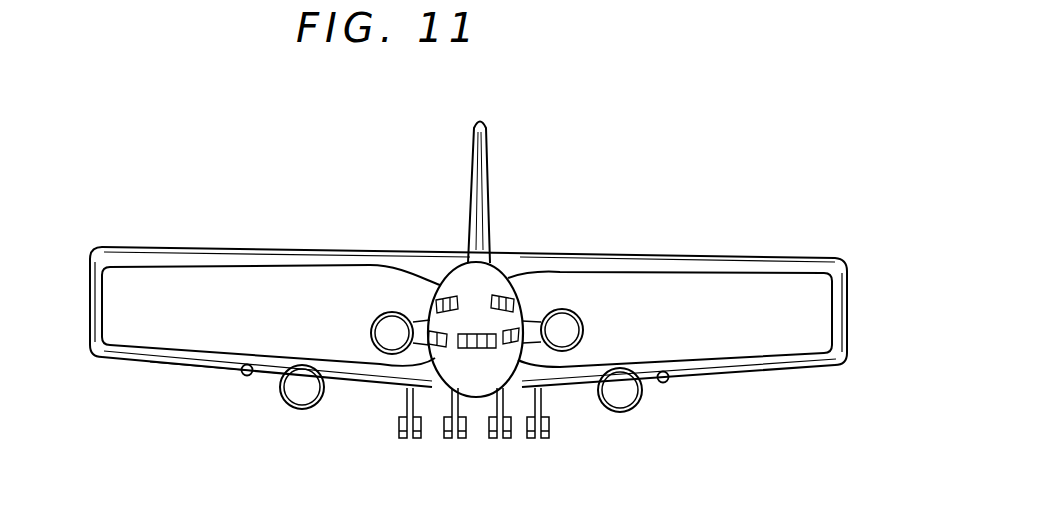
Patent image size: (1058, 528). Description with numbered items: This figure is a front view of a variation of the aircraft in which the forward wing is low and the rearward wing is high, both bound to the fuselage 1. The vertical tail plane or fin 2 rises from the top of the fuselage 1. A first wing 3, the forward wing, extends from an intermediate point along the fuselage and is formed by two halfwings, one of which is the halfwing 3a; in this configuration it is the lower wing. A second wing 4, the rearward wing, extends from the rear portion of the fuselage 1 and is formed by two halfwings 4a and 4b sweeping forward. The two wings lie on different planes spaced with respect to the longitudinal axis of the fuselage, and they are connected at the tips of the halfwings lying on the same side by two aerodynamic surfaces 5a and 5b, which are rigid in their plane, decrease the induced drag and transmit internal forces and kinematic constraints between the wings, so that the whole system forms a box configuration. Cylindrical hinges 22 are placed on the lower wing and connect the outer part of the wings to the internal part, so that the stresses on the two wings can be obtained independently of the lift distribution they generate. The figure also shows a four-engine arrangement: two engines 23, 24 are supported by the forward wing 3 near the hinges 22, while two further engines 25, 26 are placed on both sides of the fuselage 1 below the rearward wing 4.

The fuselage 1 is at (488, 282).
The vertical tail plane 2 is at (489, 138).
The first wing 3 is at (152, 366).
The halfwing 3a is at (197, 364).
The second wing 4 is at (139, 258).
The halfwing 4a is at (213, 257).
The halfwing 4b is at (680, 256).
The aerodynamic surface 5a is at (103, 315).
The aerodynamic surface 5b is at (830, 313).
The cylindrical hinge 22 is at (247, 377).
The engine 23 is at (305, 393).
The engine 24 is at (627, 400).
The engine 25 is at (371, 330).
The engine 26 is at (584, 330).